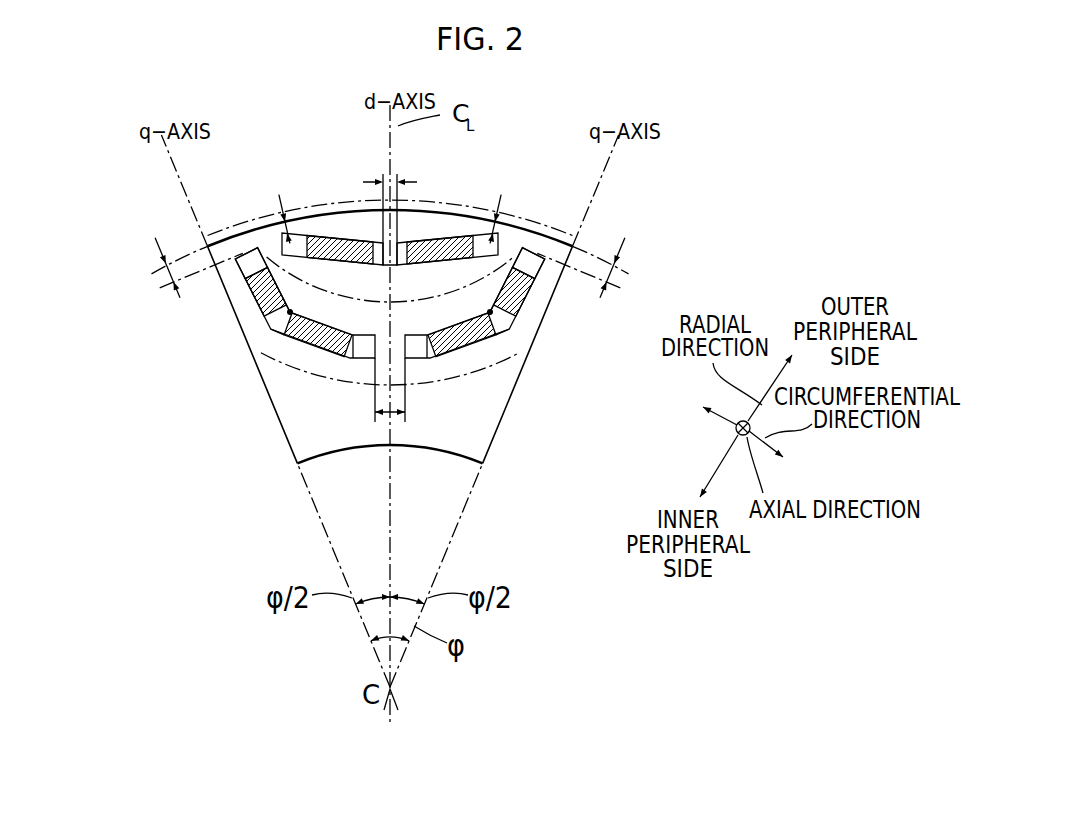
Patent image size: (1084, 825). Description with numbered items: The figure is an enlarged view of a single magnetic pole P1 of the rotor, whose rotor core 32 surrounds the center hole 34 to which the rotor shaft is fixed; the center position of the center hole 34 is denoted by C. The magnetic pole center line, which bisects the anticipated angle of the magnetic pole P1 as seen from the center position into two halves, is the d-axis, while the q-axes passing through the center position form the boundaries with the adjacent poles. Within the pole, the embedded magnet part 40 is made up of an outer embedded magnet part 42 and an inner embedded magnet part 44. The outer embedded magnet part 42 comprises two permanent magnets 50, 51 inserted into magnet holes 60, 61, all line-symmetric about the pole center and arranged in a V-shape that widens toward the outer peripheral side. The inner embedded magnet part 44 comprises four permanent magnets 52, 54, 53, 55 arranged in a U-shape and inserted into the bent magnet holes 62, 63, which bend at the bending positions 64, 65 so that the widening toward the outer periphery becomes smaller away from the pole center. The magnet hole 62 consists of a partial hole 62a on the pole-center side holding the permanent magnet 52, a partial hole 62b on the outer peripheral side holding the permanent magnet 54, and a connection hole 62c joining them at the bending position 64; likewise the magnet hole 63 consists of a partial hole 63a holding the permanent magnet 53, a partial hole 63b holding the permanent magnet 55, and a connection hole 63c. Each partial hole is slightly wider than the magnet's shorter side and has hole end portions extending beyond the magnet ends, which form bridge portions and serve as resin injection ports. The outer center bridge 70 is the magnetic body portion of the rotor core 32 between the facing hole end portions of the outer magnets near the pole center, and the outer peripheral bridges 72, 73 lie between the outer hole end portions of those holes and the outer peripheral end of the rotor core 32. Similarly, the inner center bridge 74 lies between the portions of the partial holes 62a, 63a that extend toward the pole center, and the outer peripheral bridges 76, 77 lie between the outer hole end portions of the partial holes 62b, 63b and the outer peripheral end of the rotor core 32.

The magnetic pole P1 is at (128, 240).
The rotor core 32 is at (337, 434).
The center hole 34 is at (347, 534).
The embedded magnet part 40 is at (437, 223).
The outer embedded magnet part 42 is at (515, 214).
The inner embedded magnet part 44 is at (552, 231).
The permanent magnet 50 is at (332, 240).
The permanent magnet 51 is at (450, 238).
The permanent magnet 52 is at (330, 360).
The permanent magnet 53 is at (450, 360).
The permanent magnet 54 is at (258, 300).
The permanent magnet 55 is at (524, 300).
The magnet hole 60 is at (296, 240).
The magnet hole 61 is at (482, 240).
The magnet hole 62 is at (248, 362).
The partial hole 62a is at (280, 401).
The partial hole 62b is at (243, 263).
The connection hole 62c is at (296, 347).
The magnet hole 63 is at (533, 362).
The partial hole 63a is at (496, 402).
The partial hole 63b is at (540, 263).
The connection hole 63c is at (484, 347).
The bending position 64 is at (274, 331).
The bending position 65 is at (506, 331).
The outer center bridge 70 is at (395, 180).
The outer peripheral bridge 72 is at (276, 216).
The outer peripheral bridge 73 is at (506, 218).
The inner center bridge 74 is at (391, 416).
The outer peripheral bridge 76 is at (163, 275).
The outer peripheral bridge 77 is at (617, 275).